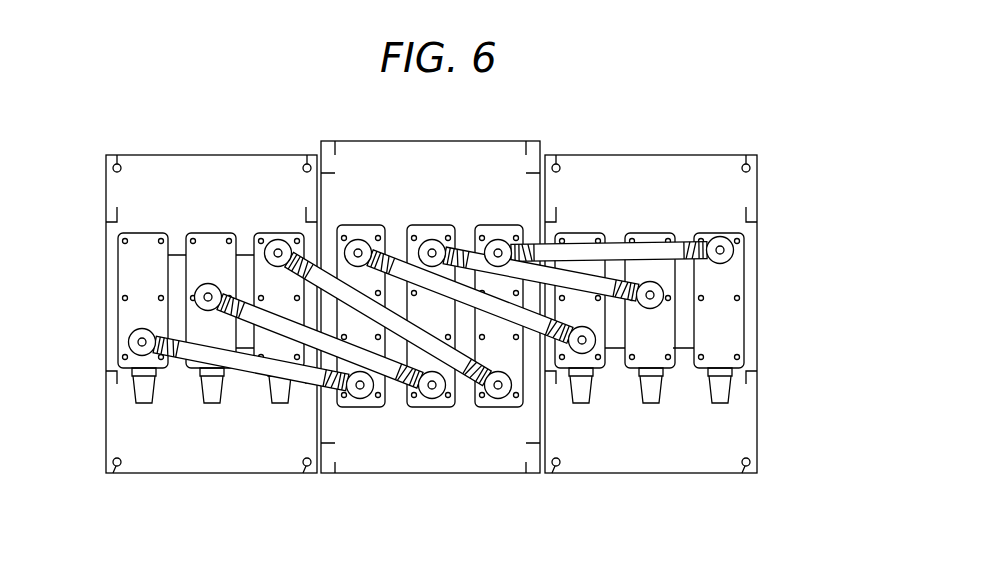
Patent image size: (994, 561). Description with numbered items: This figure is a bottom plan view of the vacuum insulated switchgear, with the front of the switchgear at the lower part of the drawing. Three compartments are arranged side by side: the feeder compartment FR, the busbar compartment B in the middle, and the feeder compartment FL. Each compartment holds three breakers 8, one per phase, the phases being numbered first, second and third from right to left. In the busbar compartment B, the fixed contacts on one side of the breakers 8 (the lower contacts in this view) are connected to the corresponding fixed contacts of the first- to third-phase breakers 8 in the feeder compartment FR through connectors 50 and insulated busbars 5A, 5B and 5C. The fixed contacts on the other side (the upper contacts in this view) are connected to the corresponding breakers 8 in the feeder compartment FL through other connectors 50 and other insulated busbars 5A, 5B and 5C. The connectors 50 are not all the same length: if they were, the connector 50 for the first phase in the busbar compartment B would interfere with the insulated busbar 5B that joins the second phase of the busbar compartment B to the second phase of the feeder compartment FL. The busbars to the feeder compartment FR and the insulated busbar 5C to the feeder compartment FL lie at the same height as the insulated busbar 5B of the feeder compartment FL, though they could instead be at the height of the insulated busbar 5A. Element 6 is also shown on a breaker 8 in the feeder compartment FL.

The insulated busbar 5A is at (613, 245).
The insulated busbar 5B is at (573, 278).
The insulated busbar 5C is at (475, 302).
The connector 50 is at (499, 239).
The breaker 8 is at (118, 325).
The boss 6 is at (728, 393).
The feeder compartment FR is at (212, 155).
The busbar compartment B is at (515, 141).
The feeder compartment FL is at (715, 155).